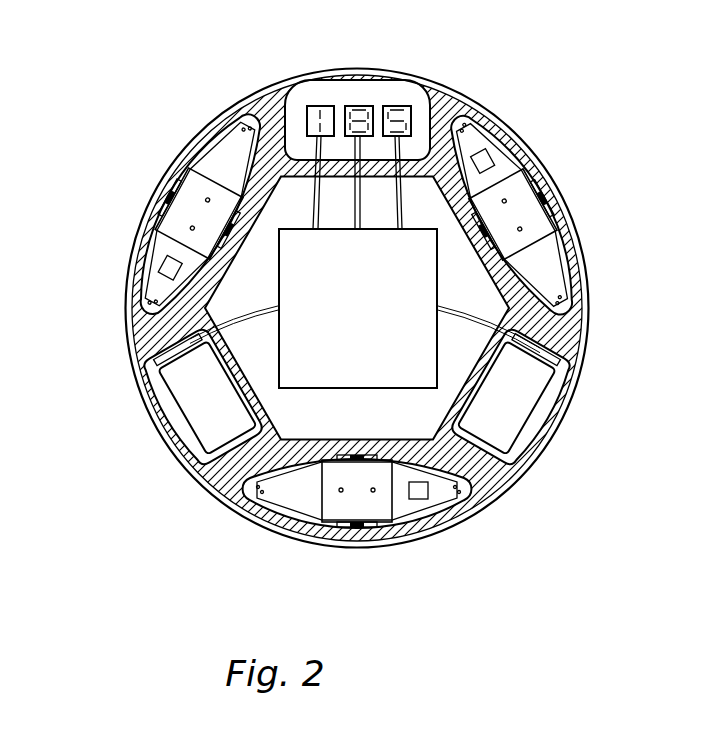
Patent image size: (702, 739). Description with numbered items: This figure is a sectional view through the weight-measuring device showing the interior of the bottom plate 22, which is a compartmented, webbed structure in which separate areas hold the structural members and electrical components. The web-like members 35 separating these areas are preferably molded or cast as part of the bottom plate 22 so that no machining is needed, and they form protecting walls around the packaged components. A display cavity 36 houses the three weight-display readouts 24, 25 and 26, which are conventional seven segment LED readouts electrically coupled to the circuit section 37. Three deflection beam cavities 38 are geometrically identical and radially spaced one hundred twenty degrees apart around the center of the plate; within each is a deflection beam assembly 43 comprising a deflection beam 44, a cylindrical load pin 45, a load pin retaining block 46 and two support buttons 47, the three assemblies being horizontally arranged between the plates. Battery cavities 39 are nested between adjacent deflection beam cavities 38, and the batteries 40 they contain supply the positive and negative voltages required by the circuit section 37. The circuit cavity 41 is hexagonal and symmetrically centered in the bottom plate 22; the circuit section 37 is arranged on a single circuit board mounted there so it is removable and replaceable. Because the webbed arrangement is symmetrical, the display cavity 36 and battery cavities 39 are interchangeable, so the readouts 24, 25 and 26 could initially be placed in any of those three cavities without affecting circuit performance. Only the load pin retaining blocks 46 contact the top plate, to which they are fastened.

The bottom plate 22 is at (525, 145).
The weight-display readout 24 is at (320, 103).
The weight-display readout 25 is at (364, 105).
The weight-display readout 26 is at (406, 69).
The web-like members 35 is at (185, 270).
The display cavity 36 is at (408, 98).
The circuit section 37 is at (323, 363).
The deflection beam cavities 38 is at (212, 140).
The battery cavities 39 is at (550, 408).
The batteries 40 is at (510, 437).
The circuit cavity 41 is at (236, 500).
The deflection beam assembly 43 is at (112, 265).
The deflection beam 44 is at (208, 155).
The cylindrical load pin 45 is at (170, 195).
The load pin retaining block 46 is at (168, 232).
The support buttons 47 is at (256, 108).